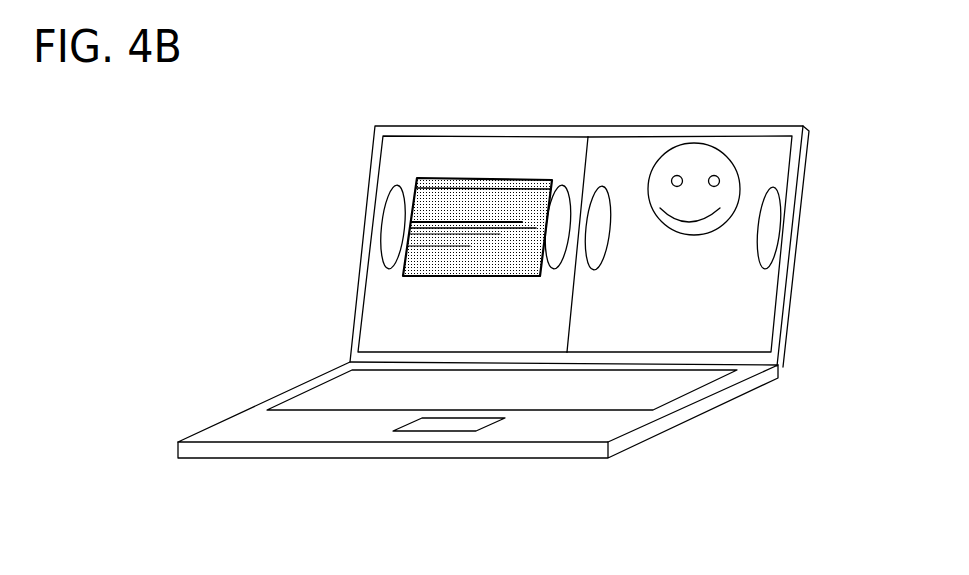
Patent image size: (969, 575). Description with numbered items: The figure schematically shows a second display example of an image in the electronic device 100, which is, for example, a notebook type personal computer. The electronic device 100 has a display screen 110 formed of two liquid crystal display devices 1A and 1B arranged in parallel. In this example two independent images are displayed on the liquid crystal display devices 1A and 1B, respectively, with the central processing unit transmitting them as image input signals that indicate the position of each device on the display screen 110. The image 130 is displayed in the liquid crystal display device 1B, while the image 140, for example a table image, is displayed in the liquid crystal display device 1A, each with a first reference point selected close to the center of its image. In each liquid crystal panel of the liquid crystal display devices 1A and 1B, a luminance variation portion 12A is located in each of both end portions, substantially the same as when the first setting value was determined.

The electronic device 100 is at (808, 92).
The display screen 110 is at (708, 37).
The liquid crystal display device 1A is at (488, 137).
The liquid crystal display device 1B is at (699, 137).
The image 130 is at (735, 157).
The image 140 is at (440, 180).
The luminance variation portion 12A is at (388, 227).